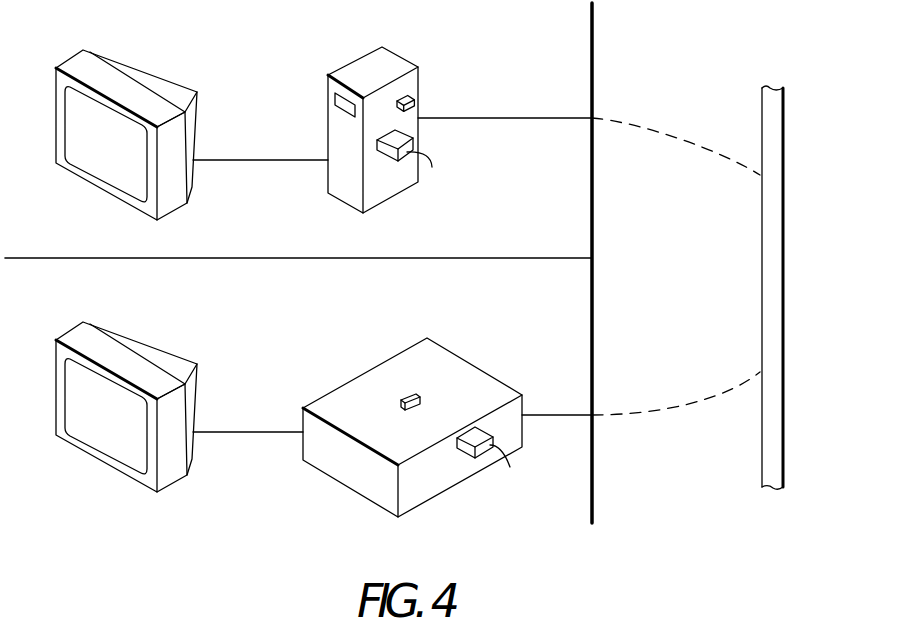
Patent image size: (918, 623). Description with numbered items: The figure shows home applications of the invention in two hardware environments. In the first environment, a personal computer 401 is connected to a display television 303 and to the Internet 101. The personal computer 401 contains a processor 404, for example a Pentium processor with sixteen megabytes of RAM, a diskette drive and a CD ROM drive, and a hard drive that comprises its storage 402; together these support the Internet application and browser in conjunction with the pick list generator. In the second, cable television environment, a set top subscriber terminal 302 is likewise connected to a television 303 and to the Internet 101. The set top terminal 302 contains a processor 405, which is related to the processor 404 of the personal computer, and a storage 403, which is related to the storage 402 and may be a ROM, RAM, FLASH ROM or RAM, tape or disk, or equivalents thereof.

The television 303 is at (103, 57).
The personal computer 401 is at (390, 65).
The processor 404 is at (413, 102).
The storage 402 is at (387, 153).
The subscriber terminal 302 is at (430, 358).
The processor 405 is at (400, 402).
The storage 403 is at (467, 448).
The Internet 101 is at (762, 110).